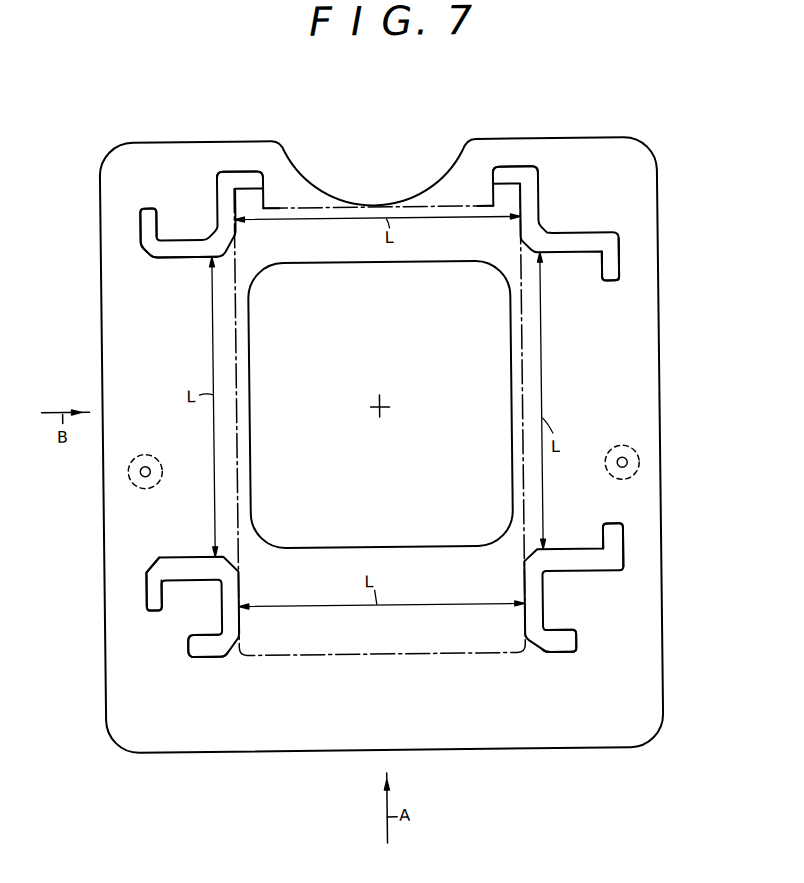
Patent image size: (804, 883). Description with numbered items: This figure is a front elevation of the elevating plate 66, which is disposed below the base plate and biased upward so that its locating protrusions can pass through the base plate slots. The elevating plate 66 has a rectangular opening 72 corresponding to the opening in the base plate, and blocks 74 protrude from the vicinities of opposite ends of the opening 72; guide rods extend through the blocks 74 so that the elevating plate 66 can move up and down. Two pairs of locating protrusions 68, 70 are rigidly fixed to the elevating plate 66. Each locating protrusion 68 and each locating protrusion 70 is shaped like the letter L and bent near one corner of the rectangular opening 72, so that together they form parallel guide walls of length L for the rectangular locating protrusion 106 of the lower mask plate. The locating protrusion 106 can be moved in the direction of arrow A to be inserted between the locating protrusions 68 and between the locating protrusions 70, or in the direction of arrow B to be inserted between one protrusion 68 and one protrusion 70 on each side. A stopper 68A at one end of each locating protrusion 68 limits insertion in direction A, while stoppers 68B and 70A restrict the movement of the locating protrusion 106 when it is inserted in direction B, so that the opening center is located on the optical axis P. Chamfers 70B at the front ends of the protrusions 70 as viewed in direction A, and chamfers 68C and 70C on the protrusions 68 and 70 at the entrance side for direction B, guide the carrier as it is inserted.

The elevating plate 66 is at (651, 385).
The locating protrusion 68 is at (231, 227).
The stopper 68A is at (255, 173).
The stopper 68B is at (610, 283).
The chamfer 68C is at (152, 255).
The locating protrusion 70 is at (182, 578).
The stopper 70A is at (612, 534).
The chamfer 70B is at (228, 648).
The chamfer 70C is at (154, 560).
The rectangular opening 72 is at (394, 262).
The block 74 is at (162, 460).
The locating protrusion 106 is at (524, 327).
The optical axis P is at (382, 405).